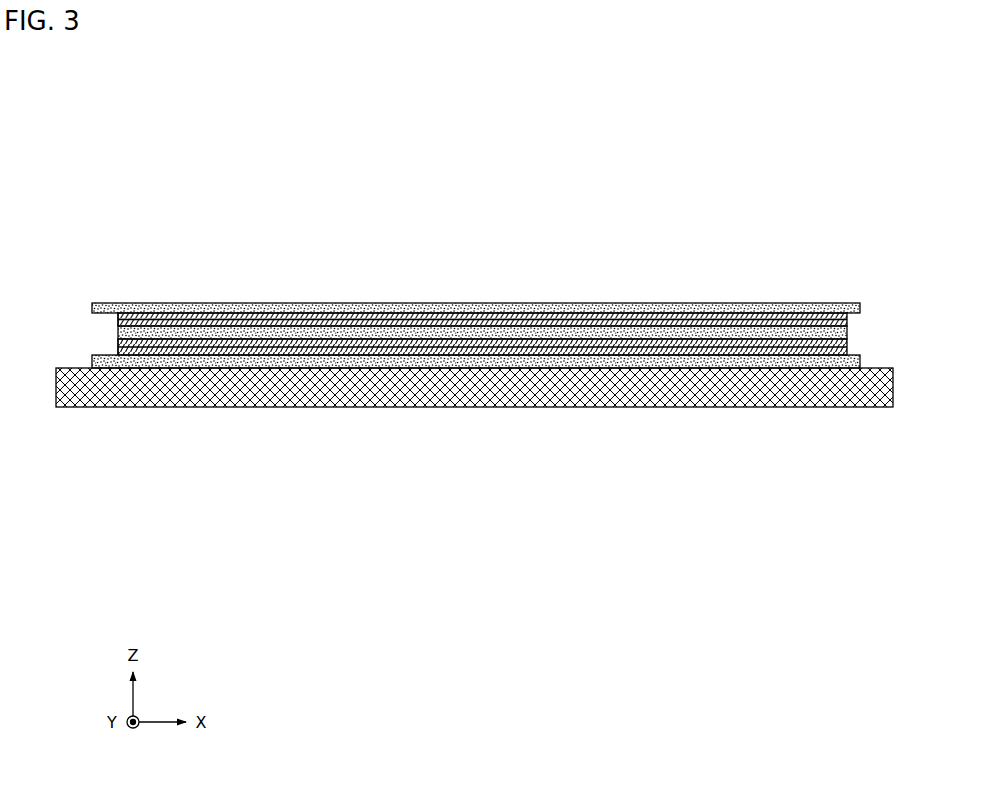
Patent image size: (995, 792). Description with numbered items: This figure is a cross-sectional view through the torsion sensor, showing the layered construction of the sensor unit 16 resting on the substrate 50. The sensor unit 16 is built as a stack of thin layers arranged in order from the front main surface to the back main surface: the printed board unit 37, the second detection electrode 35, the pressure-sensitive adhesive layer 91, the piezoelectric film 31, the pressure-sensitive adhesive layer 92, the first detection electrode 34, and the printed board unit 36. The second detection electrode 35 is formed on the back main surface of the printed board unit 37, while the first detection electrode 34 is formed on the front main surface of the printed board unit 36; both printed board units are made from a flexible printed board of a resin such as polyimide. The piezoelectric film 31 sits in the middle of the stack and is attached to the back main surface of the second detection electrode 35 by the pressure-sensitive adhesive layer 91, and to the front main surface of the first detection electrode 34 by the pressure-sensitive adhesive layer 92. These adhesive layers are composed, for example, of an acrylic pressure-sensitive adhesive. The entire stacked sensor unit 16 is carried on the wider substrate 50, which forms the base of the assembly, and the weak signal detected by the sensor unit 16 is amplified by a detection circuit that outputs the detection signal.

The sensor unit 16 is at (179, 301).
The piezoelectric film 31 is at (848, 333).
The first detection electrode 34 is at (852, 350).
The second detection electrode 35 is at (848, 319).
The printed board unit 36 is at (850, 365).
The printed board unit 37 is at (838, 302).
The substrate 50 is at (783, 406).
The pressure-sensitive adhesive layer 91 is at (118, 320).
The pressure-sensitive adhesive layer 92 is at (118, 347).